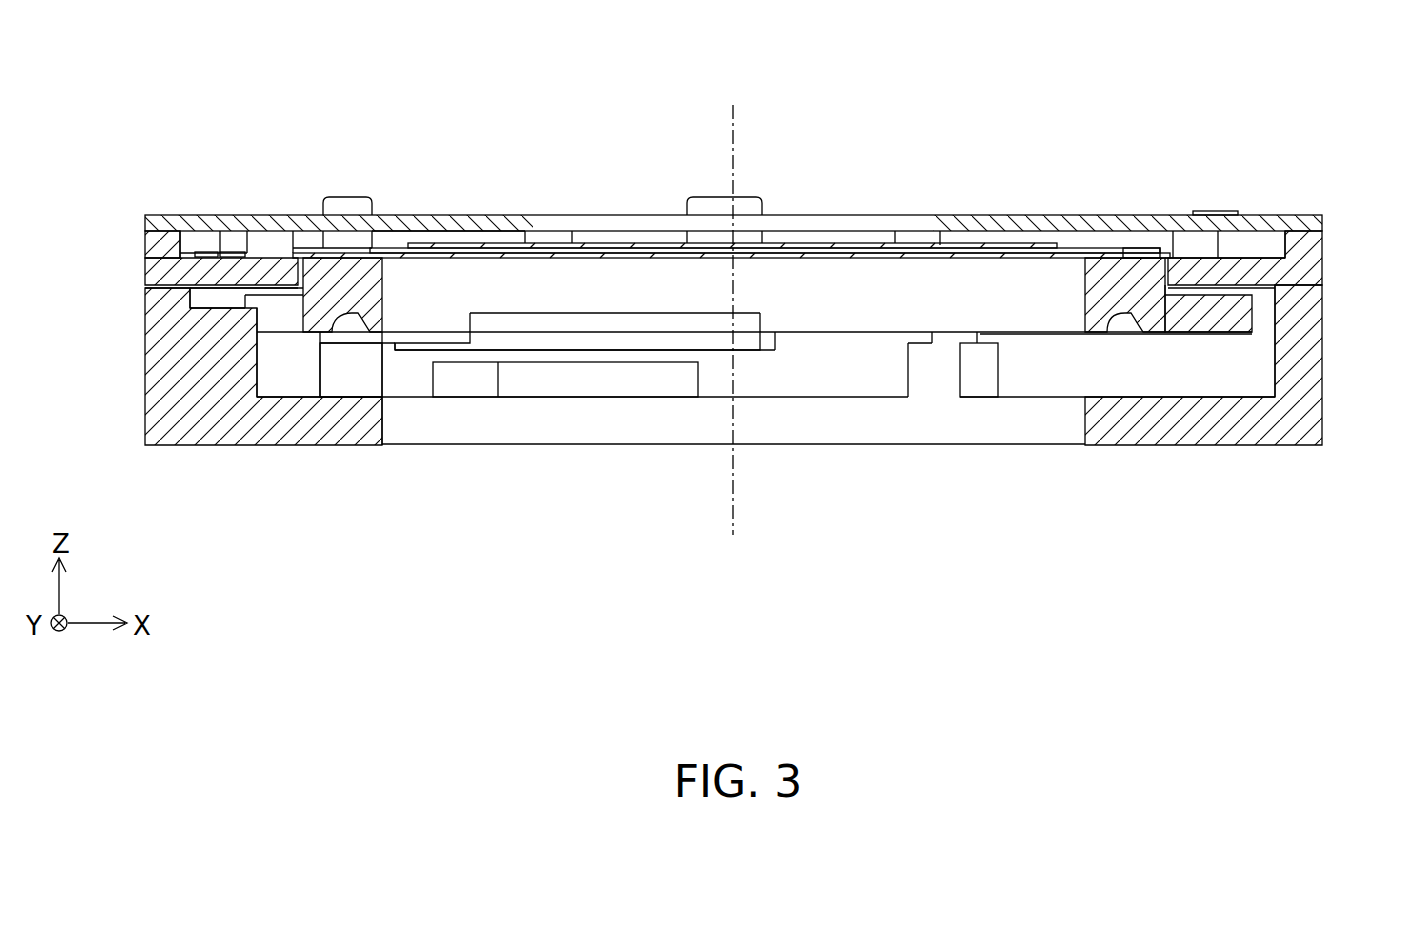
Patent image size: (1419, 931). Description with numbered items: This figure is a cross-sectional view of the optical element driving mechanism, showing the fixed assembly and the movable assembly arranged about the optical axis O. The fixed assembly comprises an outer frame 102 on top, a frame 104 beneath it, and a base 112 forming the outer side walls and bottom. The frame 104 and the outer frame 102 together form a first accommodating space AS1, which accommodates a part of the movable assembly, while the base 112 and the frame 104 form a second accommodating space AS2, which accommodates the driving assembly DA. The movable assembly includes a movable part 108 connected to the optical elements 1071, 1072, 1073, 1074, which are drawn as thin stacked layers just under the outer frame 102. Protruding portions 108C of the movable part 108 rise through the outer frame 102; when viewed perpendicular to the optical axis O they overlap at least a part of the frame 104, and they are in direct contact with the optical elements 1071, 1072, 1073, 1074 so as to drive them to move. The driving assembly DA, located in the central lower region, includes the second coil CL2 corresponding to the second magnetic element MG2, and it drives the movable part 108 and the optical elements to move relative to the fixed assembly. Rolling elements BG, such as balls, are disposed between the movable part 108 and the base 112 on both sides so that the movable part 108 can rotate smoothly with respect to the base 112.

The outer frame 102 is at (263, 223).
The frame 104 is at (158, 262).
The movable part 108 is at (1268, 318).
The protruding portion 108C is at (340, 200).
The base 112 is at (139, 435).
The optical element 1071 is at (1015, 245).
The optical element 1072 is at (207, 250).
The optical element 1073 is at (485, 246).
The optical element 1074 is at (1124, 250).
The first accommodating space AS1 is at (396, 228).
The second accommodating space AS2 is at (190, 304).
The rolling element BG is at (357, 334).
The second magnetic element MG2 is at (513, 335).
The second coil CL2 is at (465, 502).
The driving assembly DA is at (577, 446).
The optical axis O is at (733, 305).